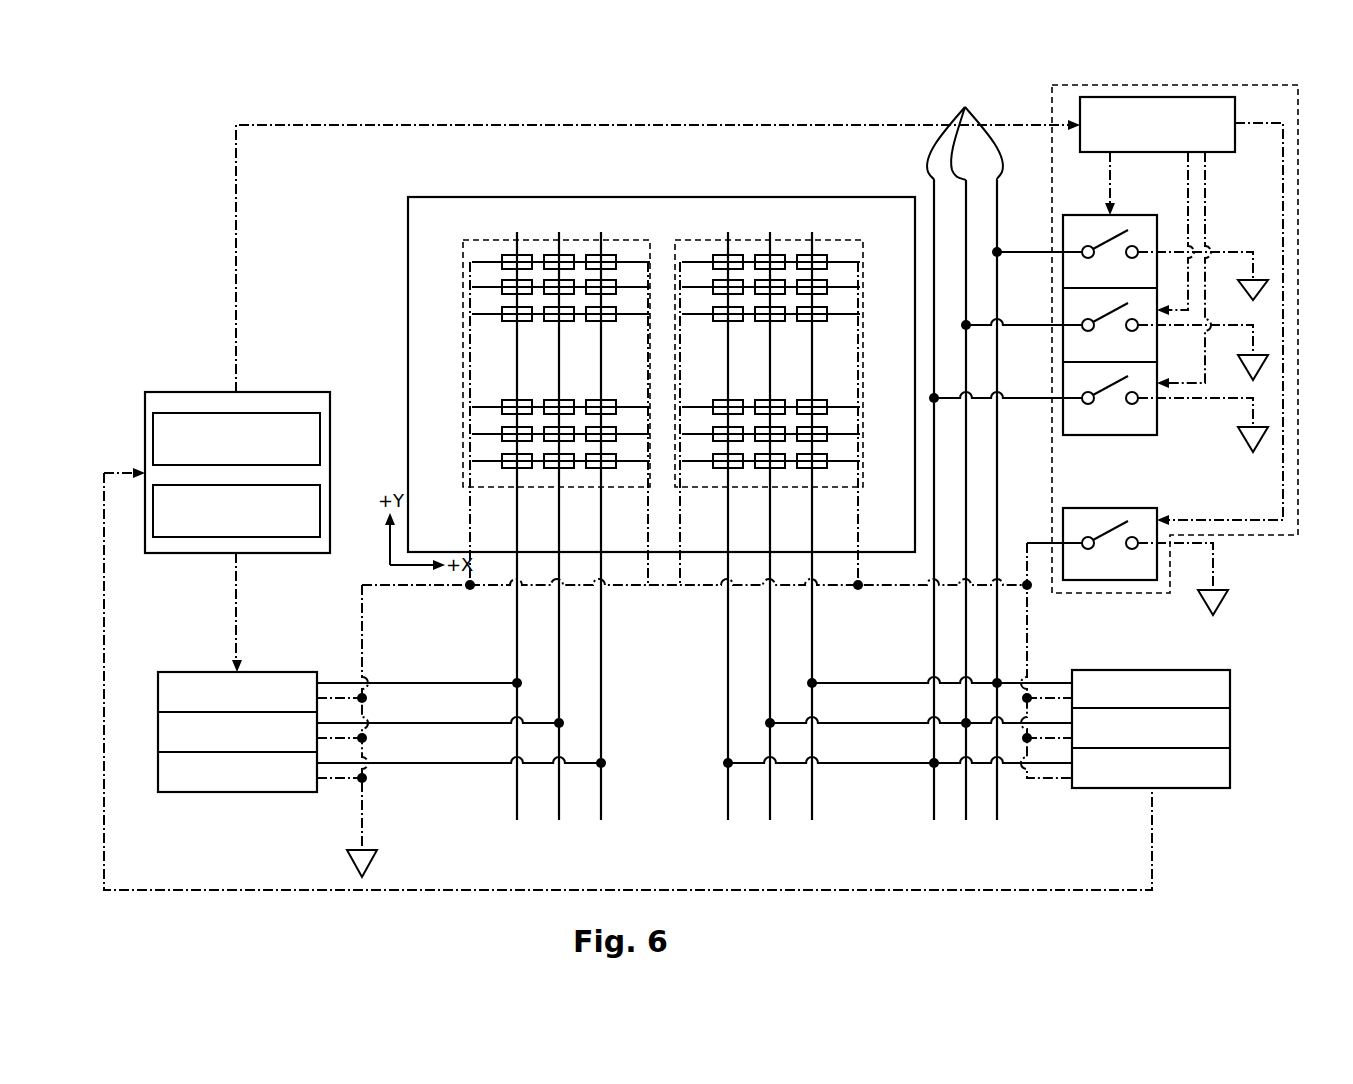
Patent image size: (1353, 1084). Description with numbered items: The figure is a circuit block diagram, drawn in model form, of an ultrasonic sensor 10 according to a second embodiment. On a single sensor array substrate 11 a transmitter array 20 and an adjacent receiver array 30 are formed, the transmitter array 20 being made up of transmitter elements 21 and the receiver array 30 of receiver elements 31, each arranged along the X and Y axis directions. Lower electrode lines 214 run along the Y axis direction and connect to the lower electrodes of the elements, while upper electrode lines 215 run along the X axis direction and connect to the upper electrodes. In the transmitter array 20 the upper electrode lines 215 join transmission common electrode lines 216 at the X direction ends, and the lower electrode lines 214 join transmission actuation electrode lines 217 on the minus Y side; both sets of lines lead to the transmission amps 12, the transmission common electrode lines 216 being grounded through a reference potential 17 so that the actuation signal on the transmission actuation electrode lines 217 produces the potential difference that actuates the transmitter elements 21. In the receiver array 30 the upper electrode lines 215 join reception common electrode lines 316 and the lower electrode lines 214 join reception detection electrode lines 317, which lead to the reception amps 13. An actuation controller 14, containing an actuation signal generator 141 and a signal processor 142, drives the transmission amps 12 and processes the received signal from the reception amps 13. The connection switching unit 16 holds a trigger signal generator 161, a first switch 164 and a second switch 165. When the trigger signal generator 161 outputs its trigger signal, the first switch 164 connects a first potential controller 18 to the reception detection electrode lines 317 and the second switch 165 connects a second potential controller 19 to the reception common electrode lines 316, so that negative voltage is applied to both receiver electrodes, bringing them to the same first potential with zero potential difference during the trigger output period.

The ultrasonic sensor 10 is at (190, 142).
The sensor array substrate 11 is at (425, 197).
The transmission amps 12 is at (238, 792).
The reception amps 13 is at (1230, 686).
The actuation controller 14 is at (263, 445).
The connection switching unit 16 is at (1113, 318).
The reference potential 17 is at (378, 863).
The first potential controller 18 is at (1253, 278).
The second potential controller 19 is at (1206, 616).
The transmitter array 20 is at (662, 316).
The transmitter elements 21 is at (528, 258).
The receiver array 30 is at (769, 316).
The receiver elements 31 is at (741, 258).
The actuation signal generator 141 is at (320, 436).
The signal processor 142 is at (320, 520).
The trigger signal generator 161 is at (1110, 97).
The first switch 164 is at (1081, 215).
The second switch 165 is at (1124, 506).
The lower electrode lines 214 is at (601, 618).
The upper electrode lines 215 is at (478, 262).
The transmission common electrode lines 216 is at (646, 262).
The transmission actuation electrode lines 217 is at (482, 683).
The reception common electrode lines 316 is at (689, 262).
The reception detection electrode lines 317 is at (880, 795).